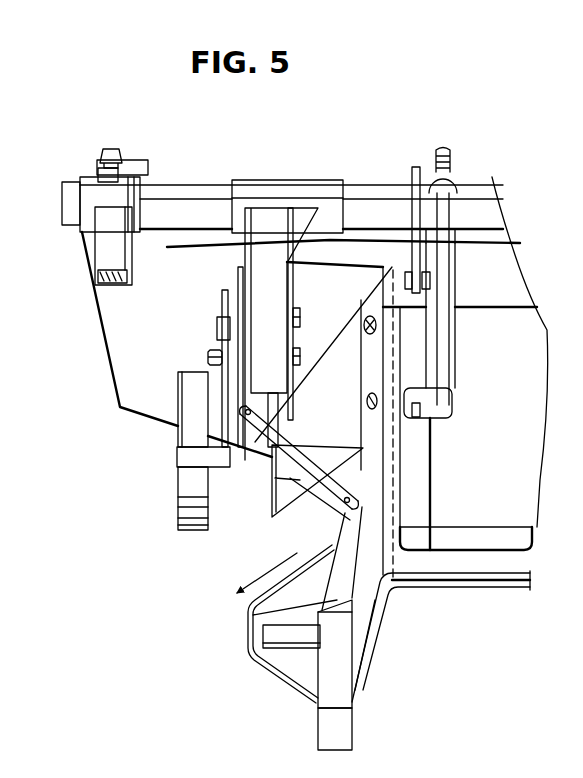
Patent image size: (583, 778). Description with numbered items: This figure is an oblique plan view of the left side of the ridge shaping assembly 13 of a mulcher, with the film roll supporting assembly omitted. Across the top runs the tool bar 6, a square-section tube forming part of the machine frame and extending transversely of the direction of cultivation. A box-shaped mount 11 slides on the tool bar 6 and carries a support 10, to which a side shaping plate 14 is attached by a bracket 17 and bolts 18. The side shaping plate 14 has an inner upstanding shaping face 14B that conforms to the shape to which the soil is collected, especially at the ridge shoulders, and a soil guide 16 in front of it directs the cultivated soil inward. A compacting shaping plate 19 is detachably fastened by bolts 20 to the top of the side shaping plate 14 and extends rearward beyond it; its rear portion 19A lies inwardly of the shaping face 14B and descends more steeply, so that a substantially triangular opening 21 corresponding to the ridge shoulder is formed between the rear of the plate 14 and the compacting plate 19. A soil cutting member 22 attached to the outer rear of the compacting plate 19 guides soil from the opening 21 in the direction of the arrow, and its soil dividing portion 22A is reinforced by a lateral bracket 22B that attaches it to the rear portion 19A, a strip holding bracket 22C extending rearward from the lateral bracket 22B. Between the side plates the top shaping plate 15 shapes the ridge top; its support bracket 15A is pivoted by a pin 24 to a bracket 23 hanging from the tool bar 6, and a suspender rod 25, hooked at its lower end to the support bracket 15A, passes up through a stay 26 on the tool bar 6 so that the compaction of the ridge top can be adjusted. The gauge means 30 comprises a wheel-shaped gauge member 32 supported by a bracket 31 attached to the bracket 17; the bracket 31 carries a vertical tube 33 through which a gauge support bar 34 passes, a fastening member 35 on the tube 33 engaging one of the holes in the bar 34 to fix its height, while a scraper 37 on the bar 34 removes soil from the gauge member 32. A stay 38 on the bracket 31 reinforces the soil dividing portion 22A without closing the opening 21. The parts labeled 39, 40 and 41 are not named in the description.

The tool bar 6 is at (210, 190).
The support 10 is at (275, 286).
The box-shaped mount 11 is at (275, 192).
The ridge shaping assembly 13 is at (470, 583).
The side shaping plate 14 is at (275, 452).
The upstanding shaping face 14B is at (282, 455).
The top shaping plate 15 is at (508, 565).
The support bracket 15A is at (425, 390).
The soil guide 16 is at (125, 348).
The bracket 17 is at (238, 270).
The bolt 18 is at (300, 312).
The compacting shaping plate 19 is at (372, 467).
The rear portion 19A is at (367, 630).
The bolt 20 is at (368, 393).
The triangular opening 21 is at (297, 522).
The soil cutting member 22 is at (249, 621).
The soil dividing portion 22A is at (313, 555).
The lateral bracket 22B is at (292, 642).
The strip holding bracket 22C is at (350, 735).
The bracket 23 is at (416, 200).
The pin 24 is at (433, 278).
The suspender rod 25 is at (442, 340).
The stay 26 is at (453, 185).
The gauge means 30 is at (193, 503).
The bracket 31 is at (298, 327).
The gauge member 32 is at (195, 405).
The vertical tube 33 is at (217, 330).
The gauge support bar 34 is at (222, 312).
The fastening member 35 is at (207, 358).
The scraper 37 is at (192, 470).
The stay 38 is at (284, 497).
The clamp block 39 is at (105, 255).
The housing 40 is at (88, 200).
The bolt 41 is at (108, 150).